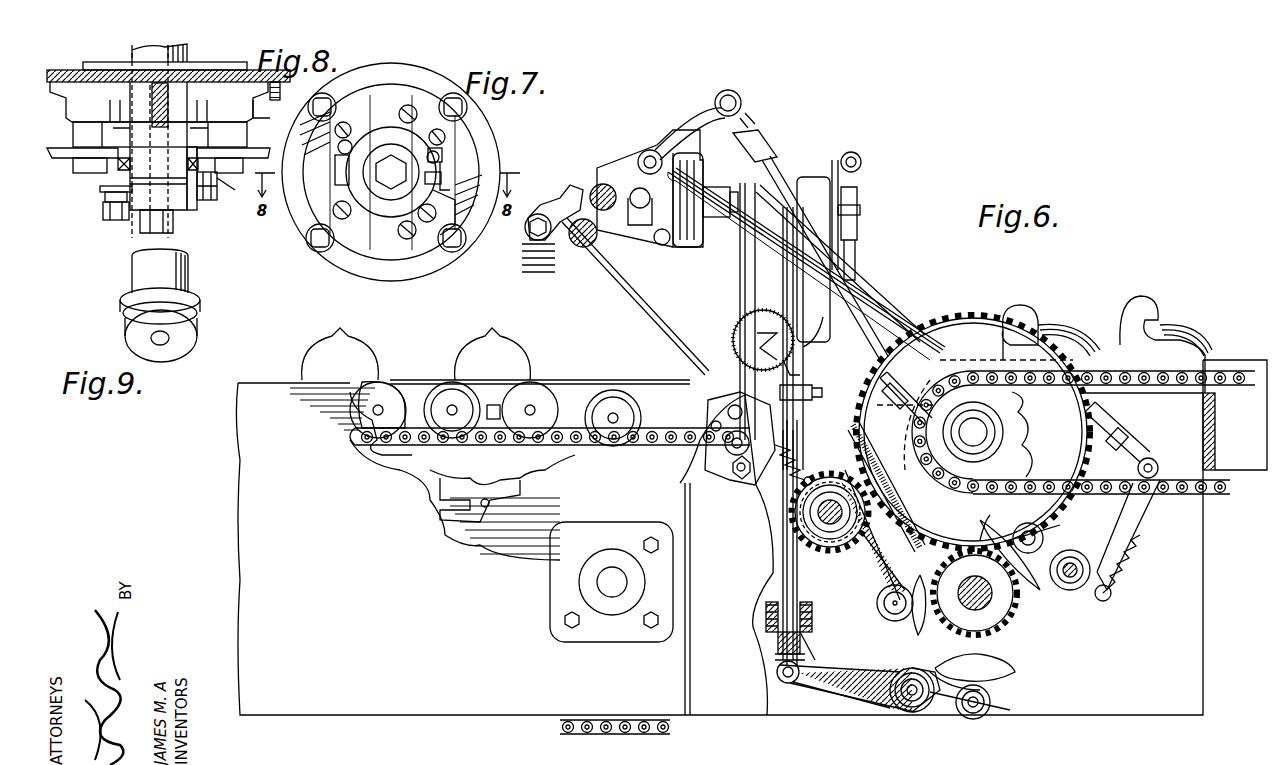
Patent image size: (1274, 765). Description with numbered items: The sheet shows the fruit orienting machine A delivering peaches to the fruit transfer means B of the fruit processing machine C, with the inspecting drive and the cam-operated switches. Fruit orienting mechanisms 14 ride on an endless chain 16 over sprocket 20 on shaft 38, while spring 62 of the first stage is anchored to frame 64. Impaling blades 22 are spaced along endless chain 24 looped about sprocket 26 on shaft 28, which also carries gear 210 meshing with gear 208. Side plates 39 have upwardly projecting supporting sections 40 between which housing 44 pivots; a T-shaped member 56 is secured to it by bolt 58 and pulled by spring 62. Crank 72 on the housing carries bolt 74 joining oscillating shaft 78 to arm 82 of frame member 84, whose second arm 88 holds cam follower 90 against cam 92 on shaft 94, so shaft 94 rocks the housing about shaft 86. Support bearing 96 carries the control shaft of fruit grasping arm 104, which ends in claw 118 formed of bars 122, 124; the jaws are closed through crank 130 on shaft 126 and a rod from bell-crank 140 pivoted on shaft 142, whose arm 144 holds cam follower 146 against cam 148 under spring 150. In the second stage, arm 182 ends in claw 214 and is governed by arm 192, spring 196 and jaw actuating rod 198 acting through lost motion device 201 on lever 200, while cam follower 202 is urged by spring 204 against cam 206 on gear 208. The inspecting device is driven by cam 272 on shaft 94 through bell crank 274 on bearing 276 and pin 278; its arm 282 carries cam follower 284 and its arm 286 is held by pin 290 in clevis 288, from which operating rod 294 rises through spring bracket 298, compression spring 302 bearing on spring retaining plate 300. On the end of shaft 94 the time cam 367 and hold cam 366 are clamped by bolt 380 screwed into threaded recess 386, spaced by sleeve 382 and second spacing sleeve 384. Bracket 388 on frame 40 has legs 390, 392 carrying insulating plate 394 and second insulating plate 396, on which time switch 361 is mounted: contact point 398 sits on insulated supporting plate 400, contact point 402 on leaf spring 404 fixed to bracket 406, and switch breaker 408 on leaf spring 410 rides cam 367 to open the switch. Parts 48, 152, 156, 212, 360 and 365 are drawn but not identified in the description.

In FIG. 8, the shaft 94 is at (132, 51).
In FIG. 6, the shaft 94 is at (1000, 620).
In FIG. 8, the transfer means supporting section 40 is at (246, 72).
In FIG. 6, the transfer means supporting section 40 is at (766, 718).
In FIG. 8, the bracket 388 is at (165, 102).
In FIG. 8, the threaded recess 386 is at (185, 100).
In FIG. 8, the leg 392 is at (262, 125).
In FIG. 8, the leg 390 is at (80, 130).
In FIG. 8, the insulating plate 394 is at (100, 172).
In FIG. 7, the insulating plate 394 is at (350, 264).
In FIG. 8, the insulated supporting plate 400 is at (115, 183).
In FIG. 7, the insulated supporting plate 400 is at (470, 215).
In FIG. 8, the second spacing sleeve 384 is at (128, 178).
In FIG. 8, the time cam 367 is at (108, 205).
In FIG. 7, the time cam 367 is at (410, 165).
In FIG. 9, the time cam 367 is at (195, 300).
In FIG. 8, the nut / bolt 365 is at (104, 220).
In FIG. 7, the nut / bolt 365 is at (318, 212).
In FIG. 8, the hold cam 366 is at (131, 222).
In FIG. 9, the hold cam 366 is at (126, 343).
In FIG. 8, the bolt 380 is at (166, 228).
In FIG. 7, the bolt 380 is at (391, 200).
In FIG. 8, the spacing sleeve 382 is at (192, 210).
In FIG. 8, the second insulating plate 396 is at (210, 176).
In FIG. 7, the second insulating plate 396 is at (398, 98).
In FIG. 8, the time switch 361 is at (229, 203).
In FIG. 7, the time switch 361 is at (446, 180).
In FIG. 7, the leaf spring 410 is at (391, 144).
In FIG. 7, the bracket 406 is at (450, 148).
In FIG. 7, the leaf spring 404 is at (448, 160).
In FIG. 7, the switch breaker 408 is at (445, 168).
In FIG. 7, the contact point 398 is at (445, 182).
In FIG. 7, the contact point 402 is at (440, 195).
In FIG. 7, the plate 360 is at (378, 235).
In FIG. 6, the side plates 39 is at (1200, 645).
In FIG. 6, the frame 64 is at (500, 718).
In FIG. 6, the fruit orienting machine A is at (262, 364).
In FIG. 6, the sprocket 20 is at (490, 548).
In FIG. 6, the fruit orienting mechanisms 14 is at (440, 385).
In FIG. 6, the endless chain 16 is at (398, 440).
In FIG. 6, the endless chain 24 is at (1220, 372).
In FIG. 6, the gear 210 is at (912, 322).
In FIG. 6, the shaft 28 is at (984, 418).
In FIG. 6, the sprocket 26 is at (1040, 446).
In FIG. 6, the impaling blades 22 is at (1060, 325).
In FIG. 6, the shaft 86 is at (830, 540).
In FIG. 6, the second arm 88 is at (870, 570).
In FIG. 6, the cam follower 90 is at (880, 615).
In FIG. 6, the cam 92 is at (918, 620).
In FIG. 6, the pawl 212 is at (1010, 608).
In FIG. 6, the shaft 142 is at (1066, 590).
In FIG. 6, the arm 144 is at (1043, 540).
In FIG. 6, the bell-crank 140 is at (1130, 522).
In FIG. 6, the spring 150 is at (1140, 574).
In FIG. 6, the pivot 152 is at (1103, 600).
In FIG. 6, the cam 148 is at (985, 525).
In FIG. 6, the cam follower 146 is at (1020, 530).
In FIG. 6, the arm 82 is at (880, 455).
In FIG. 6, the lever 200 is at (905, 400).
In FIG. 6, the spring 204 is at (812, 480).
In FIG. 6, the cam follower 202 is at (750, 475).
In FIG. 6, the cam 206 is at (758, 488).
In FIG. 6, the gear 208 is at (785, 523).
In FIG. 6, the inspecting device operating rod 294 is at (787, 562).
In FIG. 6, the spring bracket 298 is at (765, 610).
In FIG. 6, the compression spring 302 is at (778, 645).
In FIG. 6, the spring retaining plate 300 is at (812, 658).
In FIG. 6, the clevis 288 is at (777, 670).
In FIG. 6, the pin 290 is at (783, 676).
In FIG. 6, the arm 286 is at (822, 700).
In FIG. 6, the bell crank 274 is at (864, 704).
In FIG. 6, the pin 278 is at (908, 712).
In FIG. 6, the bearing 276 is at (925, 712).
In FIG. 6, the arm 282 is at (960, 718).
In FIG. 6, the cam follower 284 is at (985, 712).
In FIG. 6, the cam 272 is at (1010, 678).
In FIG. 6, the shaft 38 is at (598, 583).
In FIG. 6, the T-shaped member 56 is at (557, 186).
In FIG. 6, the spring 62 is at (528, 274).
In FIG. 6, the bolt 58 is at (593, 190).
In FIG. 6, the arm 48 is at (625, 290).
In FIG. 6, the first stage transfer means housing 44 is at (680, 240).
In FIG. 6, the crank 130 is at (630, 205).
In FIG. 6, the shaft 126 is at (638, 225).
In FIG. 6, the crank 72 is at (690, 125).
In FIG. 6, the bolt 74 is at (742, 100).
In FIG. 6, the oscillating shaft 78 is at (778, 166).
In FIG. 6, the fruit grasping arm support bearing 96 is at (718, 187).
In FIG. 6, the bar 156 is at (902, 318).
In FIG. 6, the lost motion device 201 is at (855, 320).
In FIG. 6, the fruit grasping arm 104 is at (740, 298).
In FIG. 6, the fruit grasping arm 182 is at (783, 270).
In FIG. 6, the fruit transfer means B is at (825, 158).
In FIG. 6, the spring 196 is at (862, 161).
In FIG. 6, the upwardly projecting arm 192 is at (840, 180).
In FIG. 6, the jaw actuating rod 198 is at (856, 270).
In FIG. 6, the bar 122 is at (760, 322).
In FIG. 6, the fruit grasping claw 118 is at (735, 345).
In FIG. 6, the fruit engaging claw 214 is at (822, 325).
In FIG. 6, the bar 124 is at (792, 362).
In FIG. 6, the frame member 84 is at (815, 395).
In FIG. 6, the fruit processing machine C is at (1202, 286).